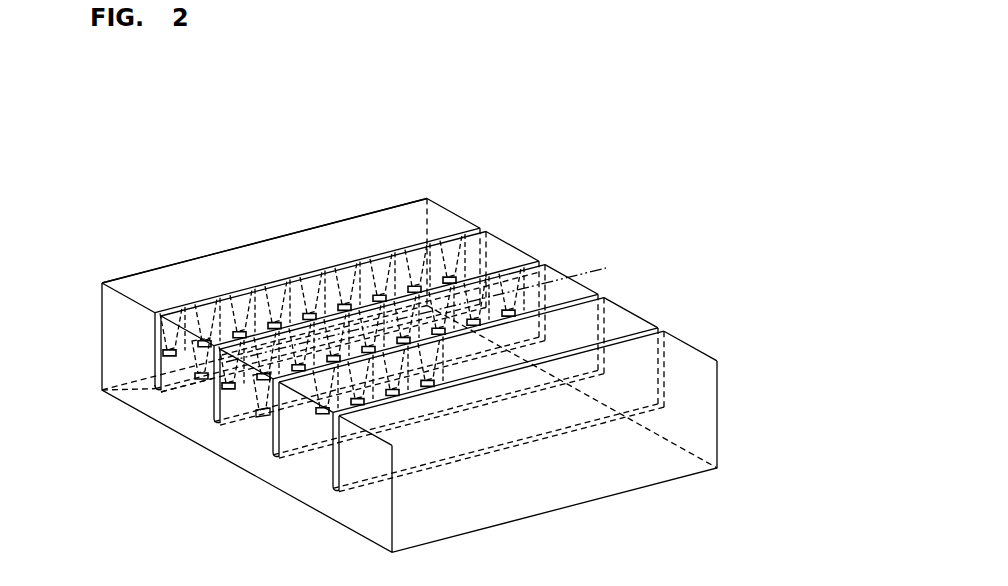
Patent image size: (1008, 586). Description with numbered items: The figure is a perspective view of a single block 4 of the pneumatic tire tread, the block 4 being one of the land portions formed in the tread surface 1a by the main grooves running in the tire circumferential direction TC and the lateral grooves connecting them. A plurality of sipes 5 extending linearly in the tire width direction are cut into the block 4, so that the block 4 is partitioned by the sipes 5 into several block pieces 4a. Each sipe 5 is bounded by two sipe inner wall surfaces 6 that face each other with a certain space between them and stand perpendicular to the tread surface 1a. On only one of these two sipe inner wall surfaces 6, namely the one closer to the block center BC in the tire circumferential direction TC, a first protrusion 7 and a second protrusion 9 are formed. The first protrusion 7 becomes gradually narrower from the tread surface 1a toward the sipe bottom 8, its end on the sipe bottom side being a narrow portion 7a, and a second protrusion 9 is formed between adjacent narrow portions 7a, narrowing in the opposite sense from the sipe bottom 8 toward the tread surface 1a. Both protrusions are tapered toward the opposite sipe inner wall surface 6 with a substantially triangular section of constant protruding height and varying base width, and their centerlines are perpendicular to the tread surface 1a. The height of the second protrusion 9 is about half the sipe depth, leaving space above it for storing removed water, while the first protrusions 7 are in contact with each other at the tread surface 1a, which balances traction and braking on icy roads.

The tread surface 1a is at (333, 243).
The block 4 is at (196, 202).
The block piece 4a is at (628, 365).
The sipe 5 is at (157, 338).
The sipe inner wall surface 6 is at (221, 418).
The first protrusion 7 is at (449, 262).
The narrow portion 7a is at (257, 413).
The sipe bottom 8 is at (154, 389).
The second protrusion 9 is at (182, 393).
The block center BC is at (434, 309).
The tire circumferential direction TC is at (354, 556).